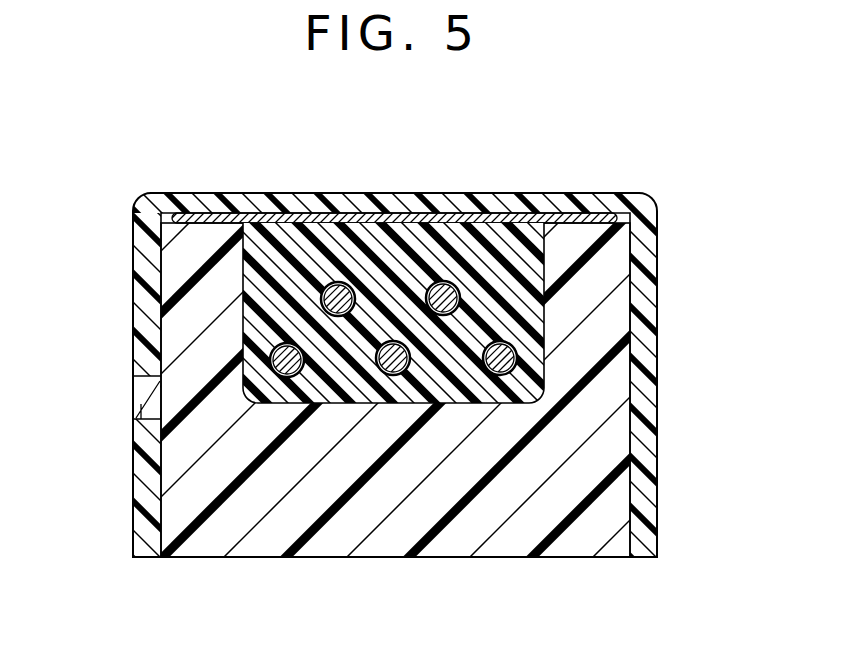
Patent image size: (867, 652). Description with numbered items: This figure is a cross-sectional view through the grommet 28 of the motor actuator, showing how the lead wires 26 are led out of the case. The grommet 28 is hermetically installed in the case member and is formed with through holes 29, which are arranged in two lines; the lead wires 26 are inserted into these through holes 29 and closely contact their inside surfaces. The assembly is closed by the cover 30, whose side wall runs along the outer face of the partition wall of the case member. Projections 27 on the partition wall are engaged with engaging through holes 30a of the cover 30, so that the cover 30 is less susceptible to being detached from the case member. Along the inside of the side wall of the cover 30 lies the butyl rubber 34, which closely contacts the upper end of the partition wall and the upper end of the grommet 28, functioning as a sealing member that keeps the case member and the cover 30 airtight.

The lead wire 26 is at (334, 284).
The projection 27 is at (145, 408).
The grommet 28 is at (515, 243).
The through hole 29 is at (325, 286).
The cover 30 is at (487, 195).
The engaging through hole 30a is at (133, 382).
The butyl rubber 34 is at (217, 212).